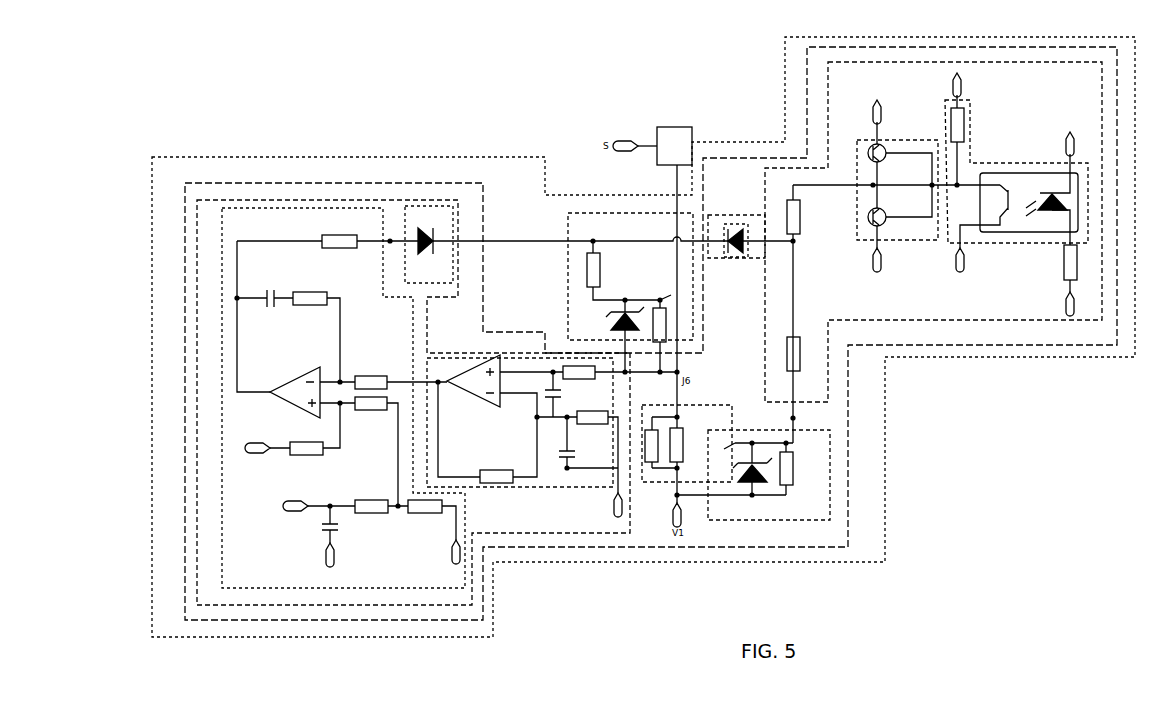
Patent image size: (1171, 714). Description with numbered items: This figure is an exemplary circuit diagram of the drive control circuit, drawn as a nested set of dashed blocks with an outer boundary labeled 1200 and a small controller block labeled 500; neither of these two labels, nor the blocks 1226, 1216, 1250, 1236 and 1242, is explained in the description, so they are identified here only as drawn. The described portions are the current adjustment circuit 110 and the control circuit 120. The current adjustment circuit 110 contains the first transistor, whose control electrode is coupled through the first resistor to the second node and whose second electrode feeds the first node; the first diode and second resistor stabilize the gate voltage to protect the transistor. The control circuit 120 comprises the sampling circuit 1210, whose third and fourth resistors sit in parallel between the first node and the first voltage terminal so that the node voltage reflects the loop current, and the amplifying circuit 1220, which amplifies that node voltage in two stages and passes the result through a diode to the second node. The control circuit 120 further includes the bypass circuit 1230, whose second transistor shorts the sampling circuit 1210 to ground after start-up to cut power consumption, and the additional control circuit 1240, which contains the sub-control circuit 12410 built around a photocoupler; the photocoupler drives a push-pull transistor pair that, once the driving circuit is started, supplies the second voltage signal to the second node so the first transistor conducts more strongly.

The drive circuit 1200 is at (1148, 104).
The controller 500 is at (674, 146).
The control circuit 120 is at (488, 212).
The comparison sub-circuit 1226 is at (485, 268).
The amplifying circuit 1220 is at (318, 207).
The bypass circuit 1230 is at (430, 205).
The sampling circuit 1210 is at (555, 490).
The current adjustment circuit 110 is at (567, 297).
The resistor network 1216 is at (705, 405).
The protection sub-circuit 1250 is at (838, 452).
The diode sub-circuit 1236 is at (717, 260).
The additional control circuit 1240 is at (1108, 83).
The transistor sub-circuit 1242 is at (890, 240).
The sub-control circuit 12410 is at (980, 148).